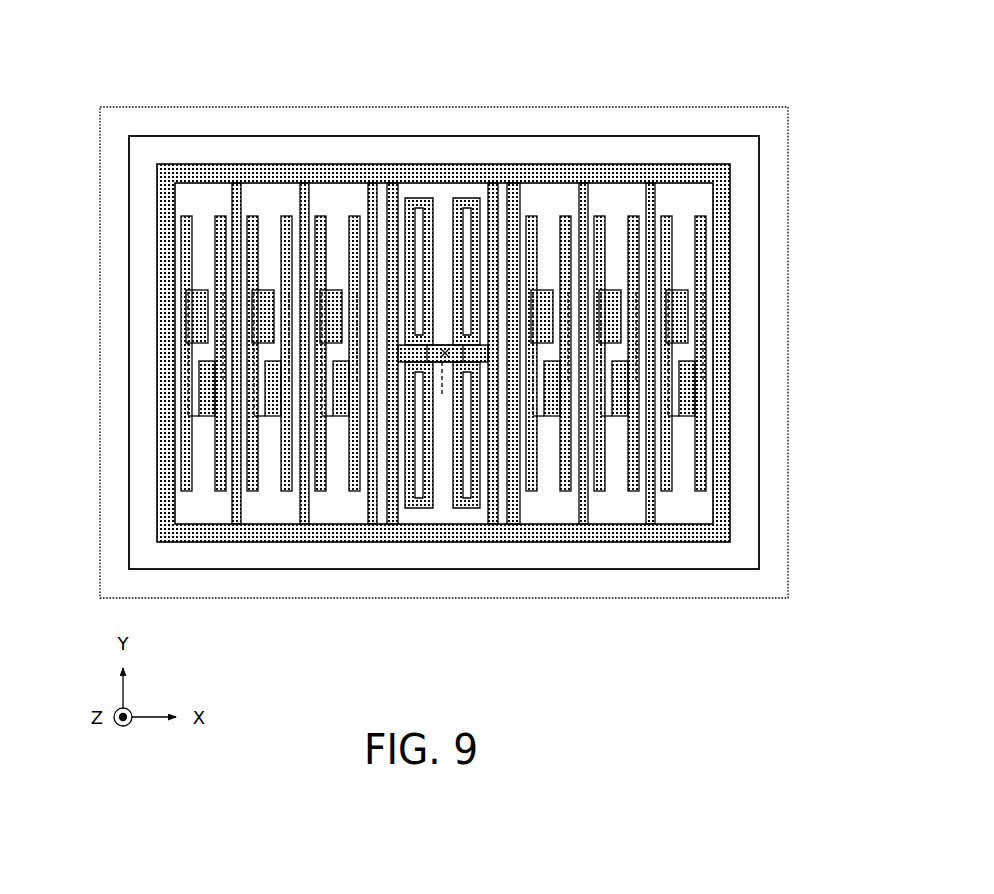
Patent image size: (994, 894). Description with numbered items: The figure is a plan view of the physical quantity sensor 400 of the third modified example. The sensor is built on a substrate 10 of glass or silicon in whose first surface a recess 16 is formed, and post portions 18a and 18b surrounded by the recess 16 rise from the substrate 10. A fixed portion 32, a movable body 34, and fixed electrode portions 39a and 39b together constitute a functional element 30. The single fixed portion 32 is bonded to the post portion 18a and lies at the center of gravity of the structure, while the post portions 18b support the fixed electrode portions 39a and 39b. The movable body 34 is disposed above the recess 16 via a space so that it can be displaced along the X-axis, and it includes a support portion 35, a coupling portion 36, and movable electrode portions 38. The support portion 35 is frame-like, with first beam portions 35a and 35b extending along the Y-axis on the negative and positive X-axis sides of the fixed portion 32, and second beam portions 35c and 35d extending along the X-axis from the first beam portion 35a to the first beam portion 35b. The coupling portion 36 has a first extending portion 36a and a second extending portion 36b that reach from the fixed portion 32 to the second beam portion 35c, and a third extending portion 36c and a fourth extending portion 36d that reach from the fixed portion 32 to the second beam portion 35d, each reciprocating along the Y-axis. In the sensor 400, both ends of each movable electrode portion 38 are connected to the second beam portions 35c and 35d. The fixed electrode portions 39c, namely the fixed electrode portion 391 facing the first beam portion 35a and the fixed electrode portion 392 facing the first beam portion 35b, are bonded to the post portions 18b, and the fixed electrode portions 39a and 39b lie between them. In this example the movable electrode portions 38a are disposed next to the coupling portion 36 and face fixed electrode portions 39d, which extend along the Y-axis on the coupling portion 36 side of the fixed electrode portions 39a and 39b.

The physical quantity sensor 400 is at (776, 74).
The substrate 10 is at (108, 501).
The recess 16 is at (617, 552).
The functional element 30 is at (150, 172).
The movable body 34 is at (172, 147).
The support portion 35 is at (438, 341).
The first beam portion 35a is at (165, 273).
The first beam portion 35b is at (725, 250).
The second beam portion 35c is at (323, 173).
The second beam portion 35d is at (570, 530).
The coupling portion 36 is at (406, 352).
The first extending portion 36a is at (411, 198).
The second extending portion 36b is at (468, 198).
The third extending portion 36c is at (417, 508).
The fourth extending portion 36d is at (467, 508).
The fixed portion 32 is at (444, 345).
The movable electrode portion 38 is at (237, 193).
The movable electrode portion 38a is at (392, 190).
The fixed electrode portion 39a is at (220, 216).
The fixed electrode portion 39b is at (253, 216).
The fixed electrode portion 39c is at (442, 367).
The fixed electrode portion 391 is at (197, 318).
The fixed electrode portion 392 is at (690, 405).
The fixed electrode portion 39d is at (355, 491).
The post portion 18a is at (465, 352).
The post portion 18b is at (270, 356).